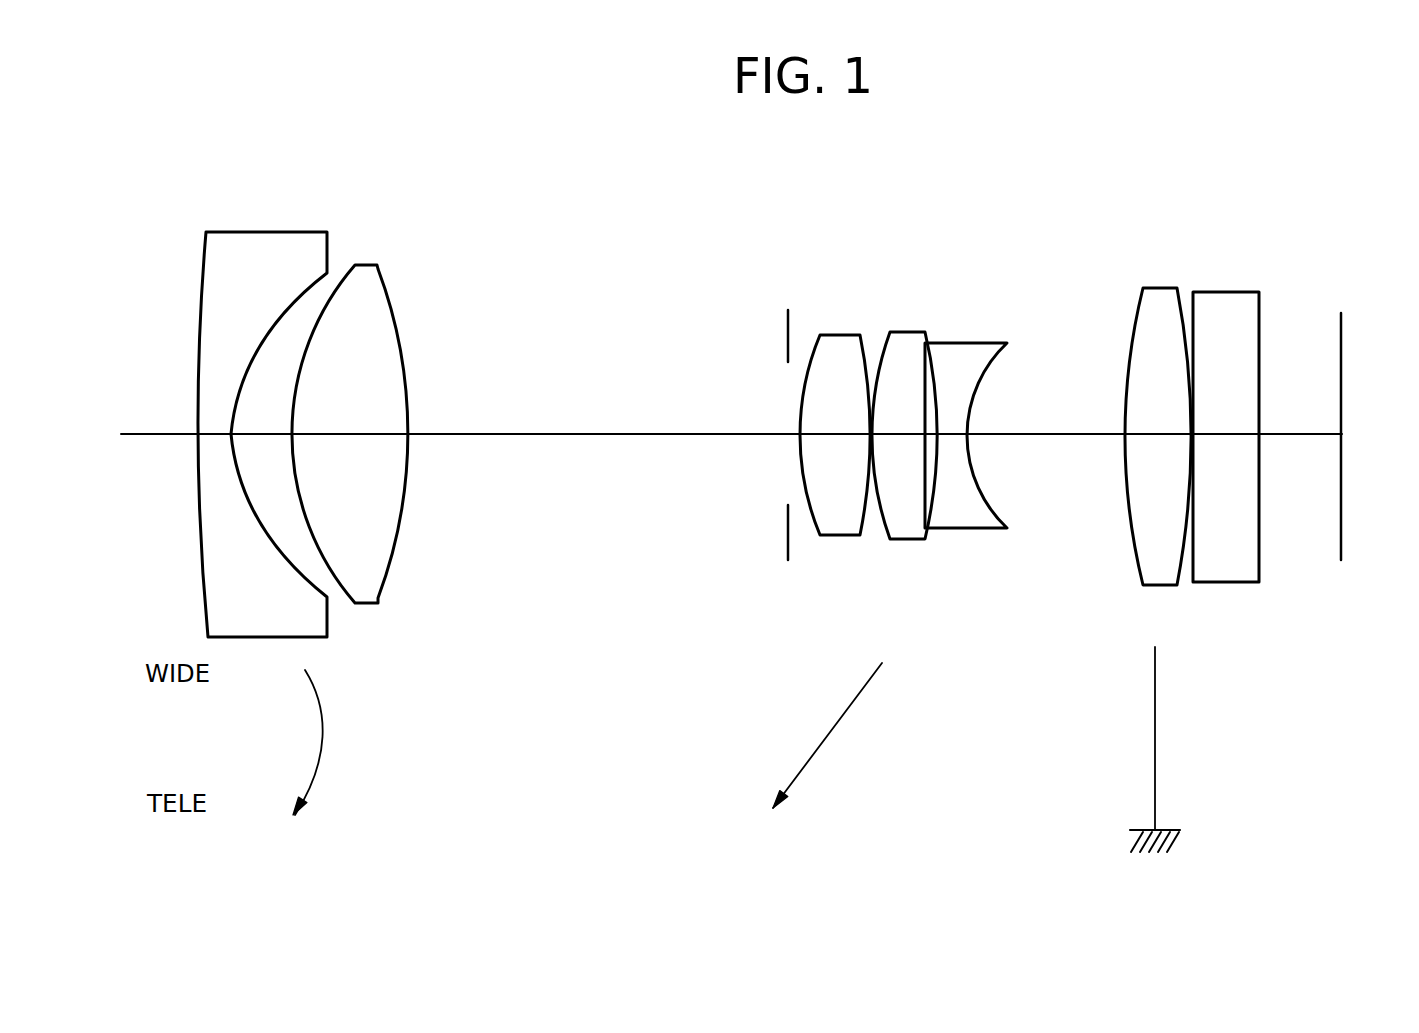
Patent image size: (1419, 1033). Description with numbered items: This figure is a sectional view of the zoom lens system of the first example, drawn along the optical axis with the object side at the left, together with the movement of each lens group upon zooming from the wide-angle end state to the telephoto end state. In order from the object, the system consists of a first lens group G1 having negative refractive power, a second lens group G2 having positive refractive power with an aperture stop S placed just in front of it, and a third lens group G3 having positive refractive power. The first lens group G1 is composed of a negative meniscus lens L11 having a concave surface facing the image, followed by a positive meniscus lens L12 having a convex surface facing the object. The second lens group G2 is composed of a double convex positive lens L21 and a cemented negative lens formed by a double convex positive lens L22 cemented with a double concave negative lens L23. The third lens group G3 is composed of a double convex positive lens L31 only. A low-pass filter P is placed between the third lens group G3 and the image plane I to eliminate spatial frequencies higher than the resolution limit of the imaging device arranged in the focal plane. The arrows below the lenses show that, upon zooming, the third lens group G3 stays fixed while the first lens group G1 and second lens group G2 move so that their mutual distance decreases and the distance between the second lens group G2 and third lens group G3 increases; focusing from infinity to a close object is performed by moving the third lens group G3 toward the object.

The first lens group G1 is at (379, 176).
The negative meniscus lens L11 is at (273, 232).
The positive meniscus lens L12 is at (358, 265).
The aperture stop S is at (786, 332).
The second lens group G2 is at (793, 241).
The double convex positive lens L21 is at (842, 333).
The double convex positive lens L22 is at (906, 330).
The double concave negative lens L23 is at (972, 341).
The third lens group G3 is at (1190, 213).
The double convex positive lens L31 is at (1162, 288).
The low-pass filter P is at (1226, 292).
The image plane I is at (1339, 338).